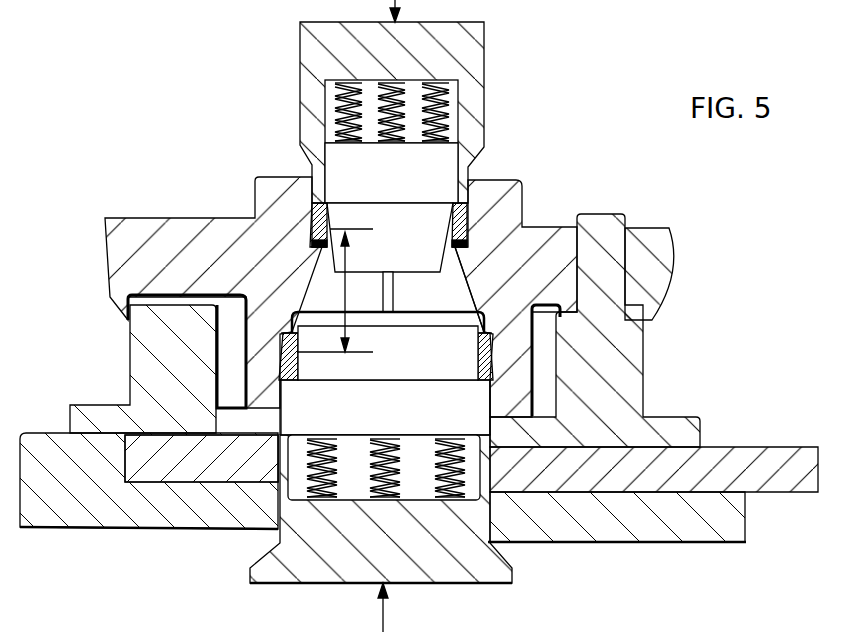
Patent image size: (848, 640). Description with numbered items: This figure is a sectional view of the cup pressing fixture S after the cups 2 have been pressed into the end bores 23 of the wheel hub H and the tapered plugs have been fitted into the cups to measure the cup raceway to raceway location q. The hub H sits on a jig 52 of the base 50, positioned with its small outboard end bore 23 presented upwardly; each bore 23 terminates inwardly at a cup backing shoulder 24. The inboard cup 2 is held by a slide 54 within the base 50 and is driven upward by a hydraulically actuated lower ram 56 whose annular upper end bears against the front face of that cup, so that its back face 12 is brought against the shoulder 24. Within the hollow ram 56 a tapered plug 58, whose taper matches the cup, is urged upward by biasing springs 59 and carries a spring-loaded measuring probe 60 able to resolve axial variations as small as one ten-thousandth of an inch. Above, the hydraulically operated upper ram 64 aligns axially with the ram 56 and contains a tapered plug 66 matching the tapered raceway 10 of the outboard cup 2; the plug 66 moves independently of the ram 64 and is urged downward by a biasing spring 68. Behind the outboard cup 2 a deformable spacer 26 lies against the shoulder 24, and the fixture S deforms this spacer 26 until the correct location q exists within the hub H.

The upper ram 64 is at (470, 50).
The biasing spring 68 is at (335, 100).
The end bores 23 is at (316, 192).
The wheel hub H is at (186, 200).
The cup pressing fixture S is at (722, 244).
The jig 52 is at (618, 355).
The base 50 is at (657, 537).
The slide 54 is at (783, 487).
The lower ram 56 is at (458, 570).
The biasing springs 59 is at (372, 472).
The tapered plug 66 is at (402, 262).
The tapered raceway 10 is at (456, 214).
The cups 2 is at (452, 233).
The back face 12 is at (312, 249).
The cup backing shoulders 24 is at (466, 250).
The deformable spacer 26 is at (458, 289).
The measuring probe 60 is at (391, 292).
The tapered plug 58 is at (408, 369).
The cup raceway to raceway location q is at (335, 290).